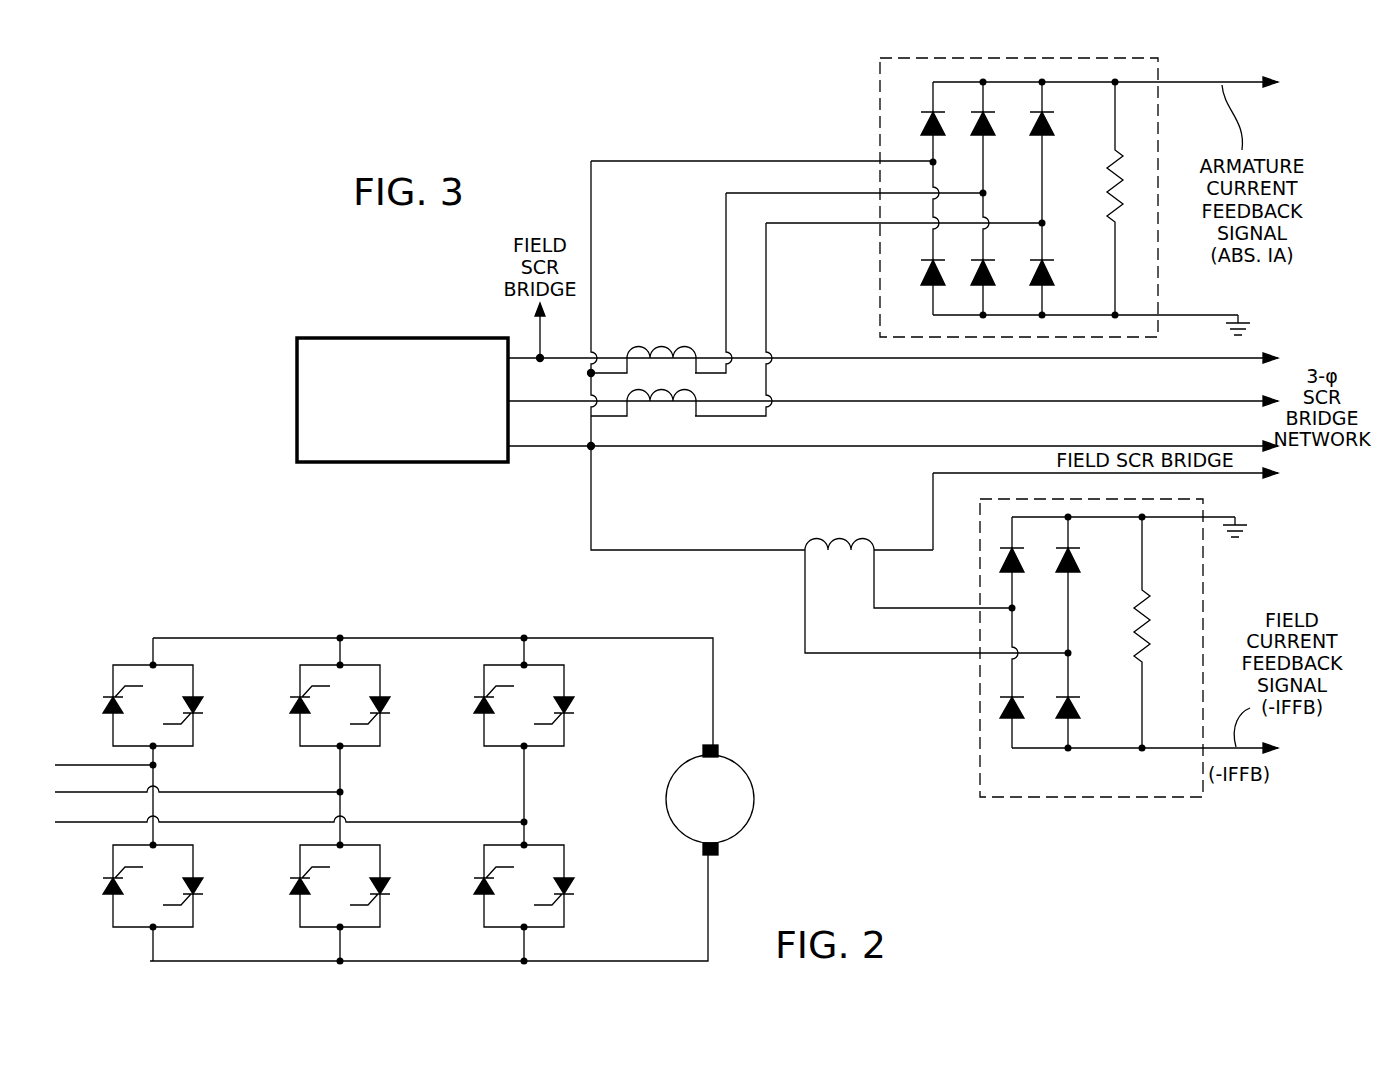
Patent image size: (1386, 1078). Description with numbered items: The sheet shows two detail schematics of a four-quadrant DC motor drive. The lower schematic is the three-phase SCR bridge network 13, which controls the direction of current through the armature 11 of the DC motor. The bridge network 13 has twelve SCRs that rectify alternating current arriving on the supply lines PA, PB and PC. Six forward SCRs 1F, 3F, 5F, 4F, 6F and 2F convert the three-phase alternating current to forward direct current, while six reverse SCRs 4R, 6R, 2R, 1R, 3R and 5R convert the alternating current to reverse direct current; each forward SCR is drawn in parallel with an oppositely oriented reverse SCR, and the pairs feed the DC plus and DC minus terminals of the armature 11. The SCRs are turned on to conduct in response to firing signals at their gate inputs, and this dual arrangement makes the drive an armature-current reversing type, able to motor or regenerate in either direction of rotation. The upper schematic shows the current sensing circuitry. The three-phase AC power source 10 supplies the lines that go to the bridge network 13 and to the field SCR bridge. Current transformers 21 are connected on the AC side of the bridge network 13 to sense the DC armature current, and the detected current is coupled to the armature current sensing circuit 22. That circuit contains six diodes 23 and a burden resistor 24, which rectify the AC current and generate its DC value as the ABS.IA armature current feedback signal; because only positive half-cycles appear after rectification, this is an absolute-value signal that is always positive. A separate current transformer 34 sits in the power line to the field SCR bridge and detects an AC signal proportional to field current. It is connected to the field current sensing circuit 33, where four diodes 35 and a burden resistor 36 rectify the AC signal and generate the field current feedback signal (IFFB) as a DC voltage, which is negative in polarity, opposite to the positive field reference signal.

In FIG. 3, the three-phase AC power source 10 is at (488, 445).
In FIG. 3, the current transformers 21 is at (682, 404).
In FIG. 3, the armature current sensing circuit 22 is at (975, 188).
In FIG. 3, the diodes 23 is at (1054, 130).
In FIG. 3, the burden resistor 24 is at (1106, 196).
In FIG. 3, the field current sensing circuit 33 is at (1053, 648).
In FIG. 3, the current transformer 34 is at (843, 540).
In FIG. 3, the diodes 35 is at (1080, 566).
In FIG. 3, the burden resistor 36 is at (1134, 616).
In FIG. 2, the armature 11 is at (721, 810).
In FIG. 2, the three-phase SCR bridge network 13 is at (384, 779).
In FIG. 2, the forward SCR 1F is at (113, 701).
In FIG. 2, the reverse SCR 4R is at (196, 709).
In FIG. 2, the forward SCR 3F is at (300, 701).
In FIG. 2, the reverse SCR 6R is at (383, 709).
In FIG. 2, the forward SCR 5F is at (484, 701).
In FIG. 2, the reverse SCR 2R is at (567, 709).
In FIG. 2, the forward SCR 4F is at (113, 882).
In FIG. 2, the reverse SCR 1R is at (196, 890).
In FIG. 2, the forward SCR 6F is at (300, 882).
In FIG. 2, the reverse SCR 3R is at (383, 890).
In FIG. 2, the forward SCR 2F is at (484, 882).
In FIG. 2, the reverse SCR 5R is at (567, 890).